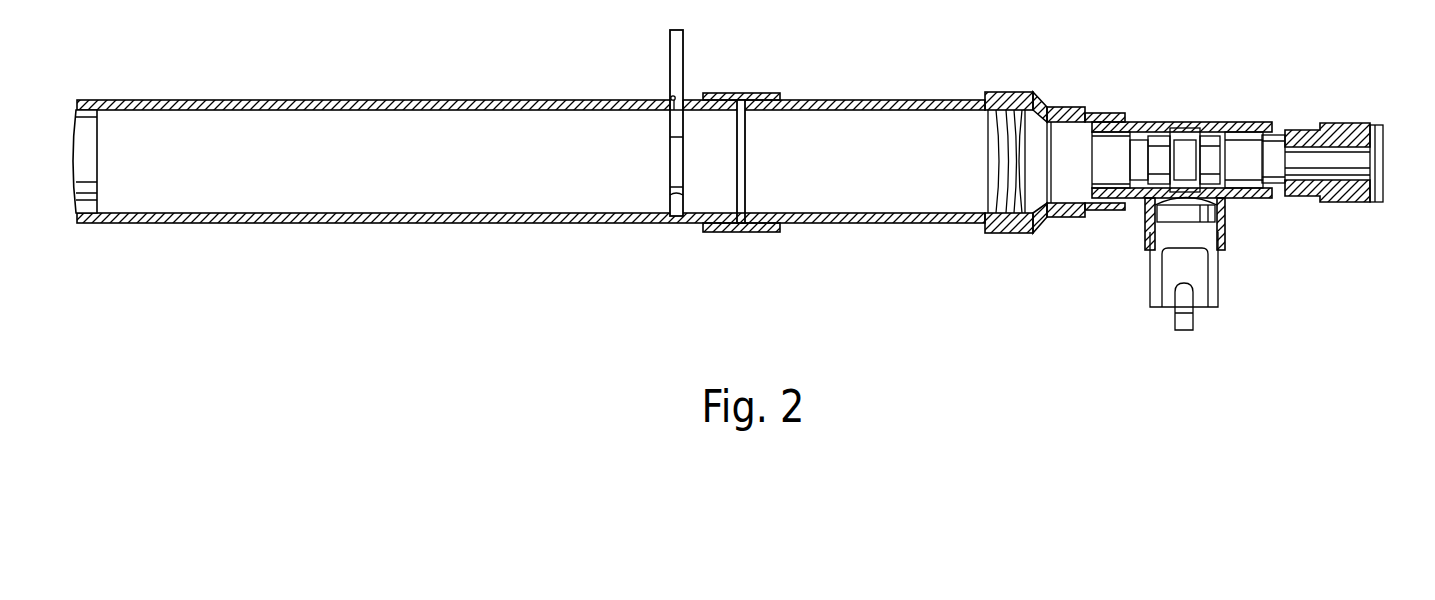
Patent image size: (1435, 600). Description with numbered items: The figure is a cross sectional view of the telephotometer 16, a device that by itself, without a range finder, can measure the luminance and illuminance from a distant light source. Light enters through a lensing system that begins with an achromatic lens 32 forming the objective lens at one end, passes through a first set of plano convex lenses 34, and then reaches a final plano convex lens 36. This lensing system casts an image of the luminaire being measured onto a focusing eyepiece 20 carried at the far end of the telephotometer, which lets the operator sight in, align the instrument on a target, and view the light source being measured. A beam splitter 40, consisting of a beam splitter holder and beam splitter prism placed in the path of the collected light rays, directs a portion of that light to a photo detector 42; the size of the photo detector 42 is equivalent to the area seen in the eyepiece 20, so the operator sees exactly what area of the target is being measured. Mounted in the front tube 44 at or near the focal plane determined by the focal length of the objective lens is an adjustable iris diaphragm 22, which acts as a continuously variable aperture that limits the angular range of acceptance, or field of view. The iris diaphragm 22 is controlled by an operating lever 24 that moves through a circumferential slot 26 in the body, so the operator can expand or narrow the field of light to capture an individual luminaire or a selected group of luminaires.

The telephotometer 16 is at (244, 99).
The focusing eyepiece 20 is at (1352, 124).
The adjustable iris diaphragm 22 is at (670, 127).
The operating lever 24 is at (670, 45).
The circumferential slot 26 is at (670, 97).
The achromatic lens 32 is at (70, 118).
The first set of plano convex lenses 34 is at (986, 165).
The final plano convex lens 36 is at (1166, 212).
The beam splitter 40 is at (1188, 128).
The photo detector 42 is at (1196, 302).
The front tube 44 is at (284, 225).